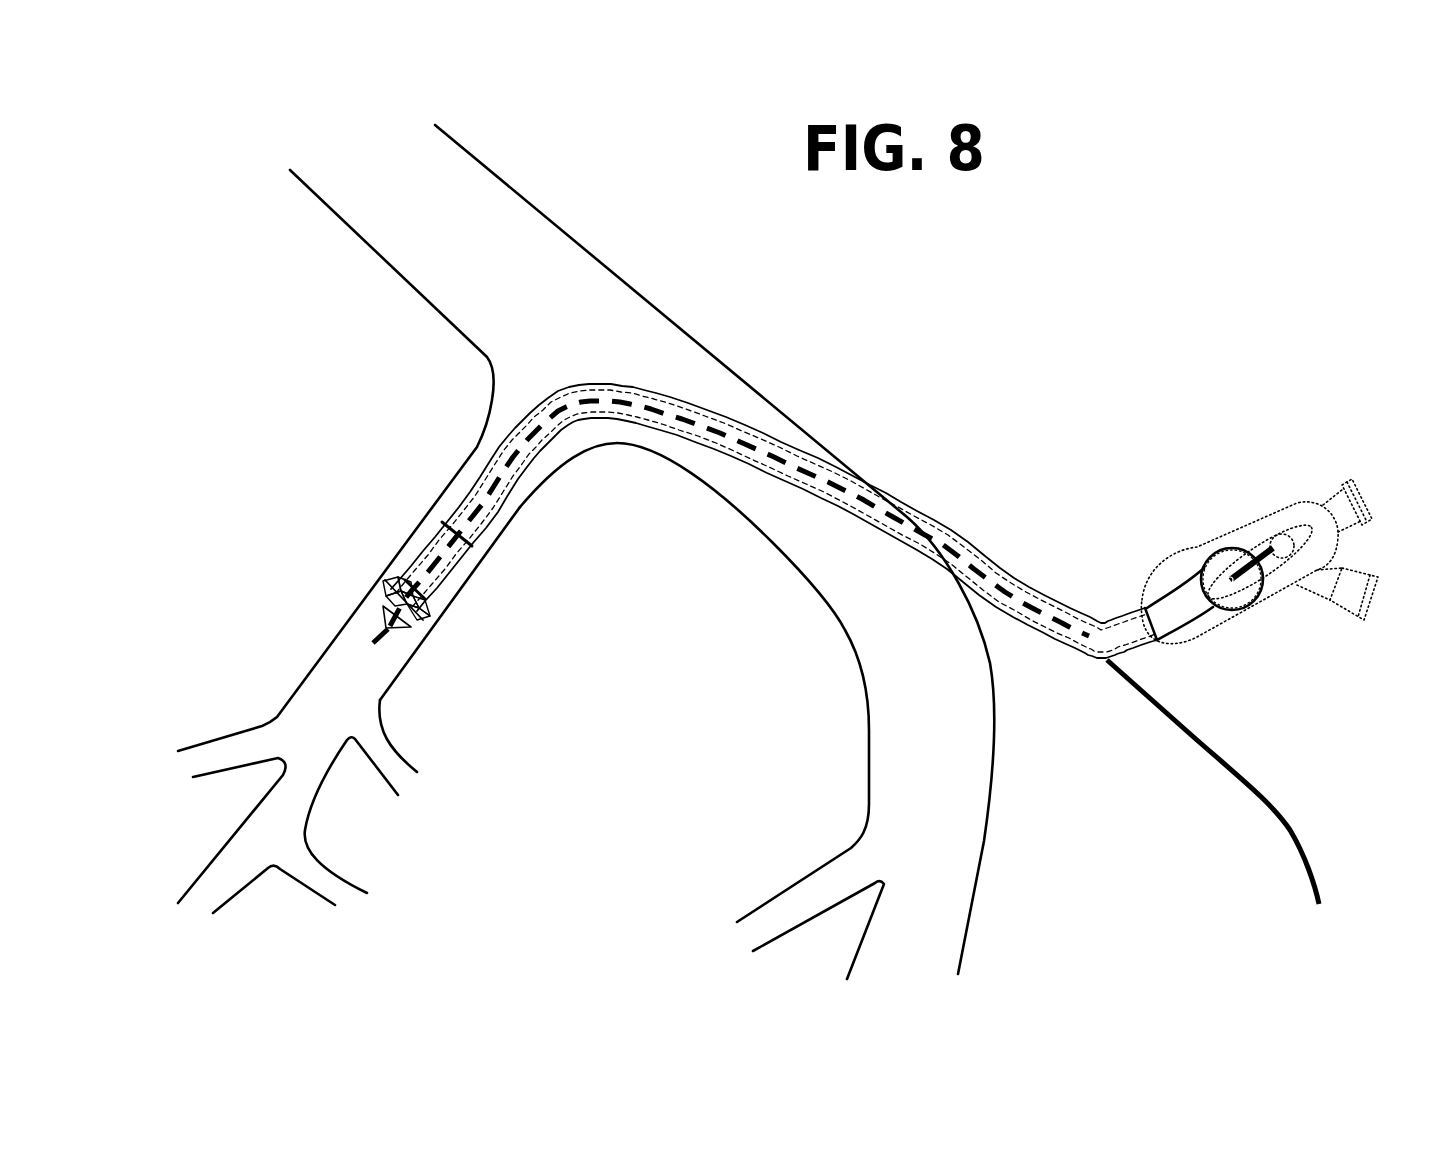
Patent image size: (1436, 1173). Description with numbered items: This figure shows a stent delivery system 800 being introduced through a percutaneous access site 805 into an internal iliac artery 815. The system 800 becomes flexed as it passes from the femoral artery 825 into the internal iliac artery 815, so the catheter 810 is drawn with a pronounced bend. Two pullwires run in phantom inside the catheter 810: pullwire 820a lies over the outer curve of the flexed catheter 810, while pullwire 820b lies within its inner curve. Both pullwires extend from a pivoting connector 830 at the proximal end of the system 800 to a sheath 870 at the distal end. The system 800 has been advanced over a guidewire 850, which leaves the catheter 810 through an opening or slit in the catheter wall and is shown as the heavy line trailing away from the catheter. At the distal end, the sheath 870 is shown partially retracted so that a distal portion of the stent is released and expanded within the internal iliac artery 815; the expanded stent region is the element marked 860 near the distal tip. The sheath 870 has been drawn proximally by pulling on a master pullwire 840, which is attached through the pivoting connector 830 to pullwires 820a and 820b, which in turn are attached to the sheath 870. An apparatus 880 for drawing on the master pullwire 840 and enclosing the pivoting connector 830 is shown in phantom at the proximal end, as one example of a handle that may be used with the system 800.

The stent delivery system 800 is at (1044, 512).
The percutaneous access site 805 is at (903, 513).
The catheter 810 is at (834, 478).
The internal iliac artery 815 is at (456, 480).
The pullwire 820a is at (1146, 606).
The pullwire 820b is at (1208, 617).
The femoral artery 825 is at (852, 611).
The pivoting connector 830 is at (1248, 610).
The master pullwire 840 is at (1265, 563).
The guidewire 850 is at (1305, 810).
The stent 860 is at (390, 580).
The sheath 870 is at (463, 571).
The apparatus for drawing on the master pullwire 880 is at (1288, 510).